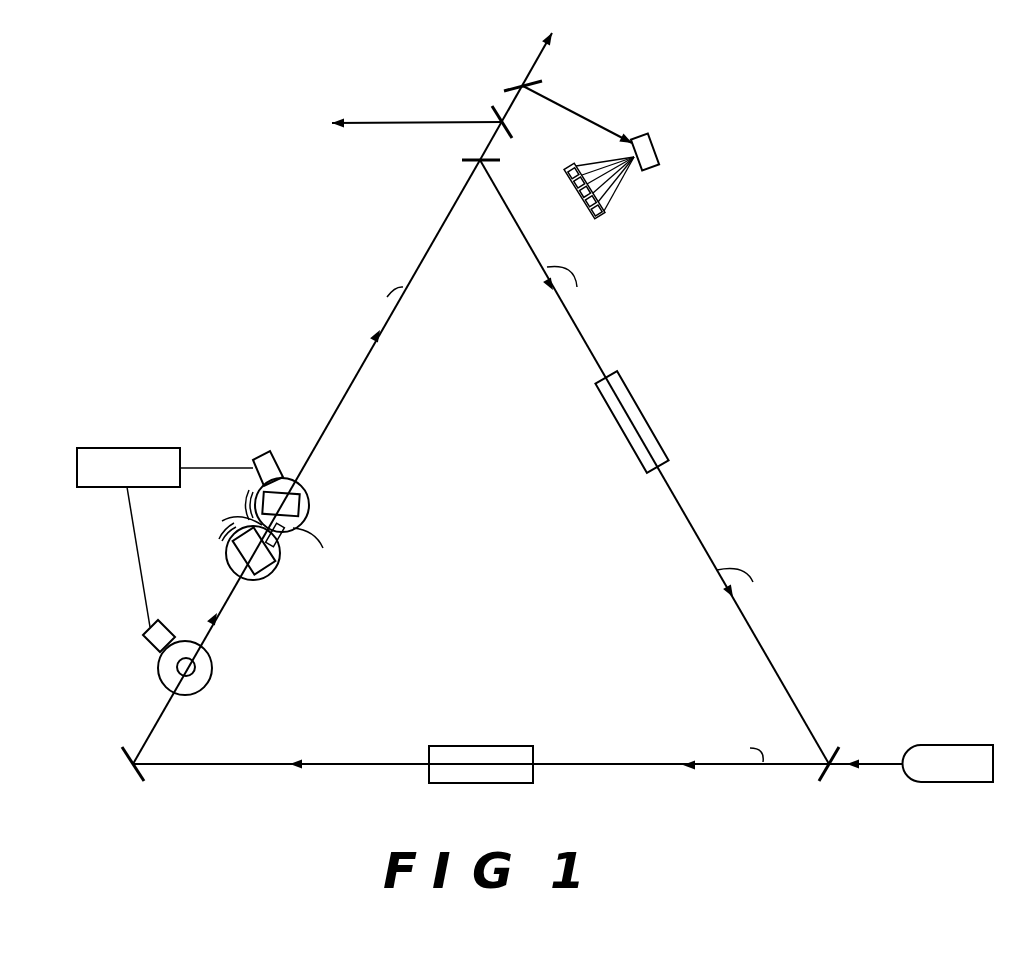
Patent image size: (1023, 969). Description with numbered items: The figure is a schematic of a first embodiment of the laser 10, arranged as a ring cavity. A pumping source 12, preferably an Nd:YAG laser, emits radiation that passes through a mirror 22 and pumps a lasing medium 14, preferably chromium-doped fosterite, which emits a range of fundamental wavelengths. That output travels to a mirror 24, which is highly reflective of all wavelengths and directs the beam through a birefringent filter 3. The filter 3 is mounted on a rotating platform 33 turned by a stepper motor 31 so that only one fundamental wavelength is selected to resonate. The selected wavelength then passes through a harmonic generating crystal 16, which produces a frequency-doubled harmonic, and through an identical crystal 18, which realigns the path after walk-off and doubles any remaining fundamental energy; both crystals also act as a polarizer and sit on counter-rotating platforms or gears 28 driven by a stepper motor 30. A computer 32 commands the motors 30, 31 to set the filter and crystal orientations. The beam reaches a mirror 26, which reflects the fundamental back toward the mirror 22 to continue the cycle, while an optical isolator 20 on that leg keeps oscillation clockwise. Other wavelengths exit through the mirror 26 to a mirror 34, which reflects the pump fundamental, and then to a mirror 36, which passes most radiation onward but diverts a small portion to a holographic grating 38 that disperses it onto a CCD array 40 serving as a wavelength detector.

The laser 10 is at (832, 231).
The pumping source 12 is at (933, 745).
The lasing medium 14 is at (465, 746).
The harmonic generating crystal 16 is at (263, 577).
The harmonic generating crystal 18 is at (308, 511).
The optical isolator 20 is at (647, 417).
The mirror 22 is at (831, 753).
The mirror 24 is at (127, 752).
The mirror 26 is at (470, 166).
The counter-rotating platforms or gears 28 is at (292, 482).
The birefringent filter 3 is at (198, 662).
The stepper motor 30 is at (265, 452).
The stepper motor 31 is at (150, 648).
The computer 32 is at (133, 448).
The platform 33 is at (197, 685).
The mirror 34 is at (494, 116).
The mirror 36 is at (515, 88).
The holographic grating 38 is at (656, 146).
The CCD array 40 is at (601, 215).